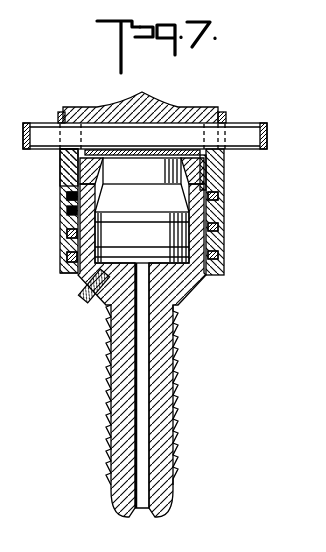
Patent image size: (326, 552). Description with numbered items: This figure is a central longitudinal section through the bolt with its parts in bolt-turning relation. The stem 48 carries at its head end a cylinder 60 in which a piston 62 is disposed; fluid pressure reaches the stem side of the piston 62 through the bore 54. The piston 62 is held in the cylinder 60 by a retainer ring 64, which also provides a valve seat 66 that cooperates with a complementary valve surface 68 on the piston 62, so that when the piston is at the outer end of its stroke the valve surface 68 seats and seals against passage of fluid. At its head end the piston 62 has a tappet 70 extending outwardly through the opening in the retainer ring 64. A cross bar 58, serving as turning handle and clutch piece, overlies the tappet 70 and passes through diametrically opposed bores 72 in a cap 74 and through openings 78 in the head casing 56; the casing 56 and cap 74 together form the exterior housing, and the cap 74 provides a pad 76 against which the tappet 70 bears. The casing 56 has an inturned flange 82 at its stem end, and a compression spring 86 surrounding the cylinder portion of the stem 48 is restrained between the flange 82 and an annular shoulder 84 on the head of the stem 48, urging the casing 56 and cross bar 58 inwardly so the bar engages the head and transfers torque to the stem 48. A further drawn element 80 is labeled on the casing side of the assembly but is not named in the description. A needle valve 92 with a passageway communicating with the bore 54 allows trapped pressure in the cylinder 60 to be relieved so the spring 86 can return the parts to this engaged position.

The stem 48 is at (105, 345).
The bore 54 is at (137, 384).
The head casing 56 is at (54, 111).
The cross bar 58 is at (248, 122).
The cylinder 60 is at (224, 186).
The piston 62 is at (175, 237).
The retainer ring 64 is at (226, 170).
The valve seat 66 is at (62, 182).
The valve surface 68 is at (67, 211).
The tappet 70 is at (62, 168).
The bores 72 is at (72, 130).
The cap 74 is at (117, 106).
The pad 76 is at (148, 150).
The openings 78 is at (60, 128).
The O-ring 80 is at (60, 232).
The inturned flange 82 is at (73, 275).
The annular shoulder 84 is at (67, 197).
The compression spring 86 is at (68, 257).
The needle valve 92 is at (85, 297).